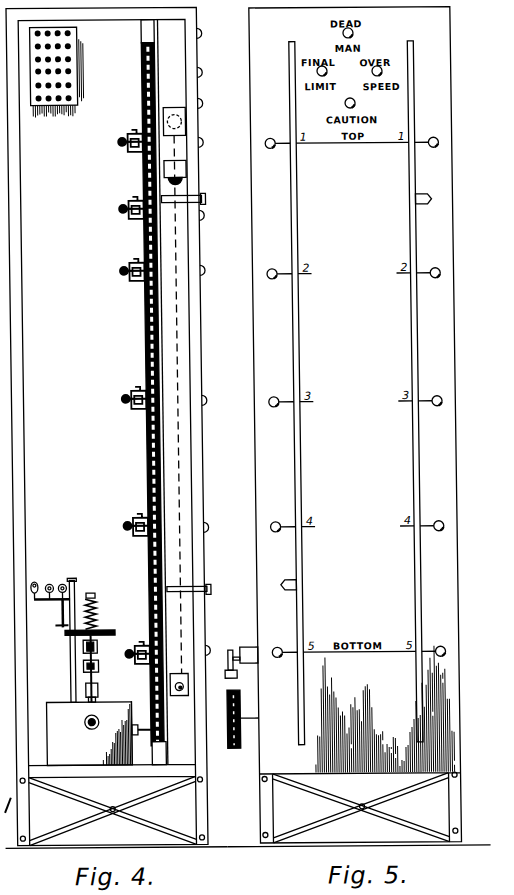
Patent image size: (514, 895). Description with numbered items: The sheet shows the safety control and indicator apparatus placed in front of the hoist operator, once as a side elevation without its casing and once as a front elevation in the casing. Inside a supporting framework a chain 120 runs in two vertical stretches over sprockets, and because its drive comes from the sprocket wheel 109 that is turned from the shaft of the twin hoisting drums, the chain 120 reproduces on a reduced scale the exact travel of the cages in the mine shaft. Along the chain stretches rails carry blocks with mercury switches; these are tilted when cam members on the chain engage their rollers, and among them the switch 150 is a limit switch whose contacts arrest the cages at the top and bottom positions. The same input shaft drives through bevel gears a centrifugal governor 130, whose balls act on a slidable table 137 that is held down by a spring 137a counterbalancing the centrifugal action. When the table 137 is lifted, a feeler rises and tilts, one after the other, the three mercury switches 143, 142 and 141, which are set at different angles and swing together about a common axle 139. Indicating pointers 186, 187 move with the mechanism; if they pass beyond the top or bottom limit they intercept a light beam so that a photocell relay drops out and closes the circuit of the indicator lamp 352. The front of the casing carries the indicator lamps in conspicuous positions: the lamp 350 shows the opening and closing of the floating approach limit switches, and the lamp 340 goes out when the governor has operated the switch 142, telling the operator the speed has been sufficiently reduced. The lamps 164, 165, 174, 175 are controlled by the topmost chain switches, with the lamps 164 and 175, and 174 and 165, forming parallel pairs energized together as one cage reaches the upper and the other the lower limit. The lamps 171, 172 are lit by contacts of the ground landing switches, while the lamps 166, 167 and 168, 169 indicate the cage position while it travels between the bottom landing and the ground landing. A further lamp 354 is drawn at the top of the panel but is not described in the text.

In FIG. 4, the chain 120 is at (146, 470).
In FIG. 4, the mercury switch 141 is at (33, 581).
In FIG. 4, the mercury switch 142 is at (48, 582).
In FIG. 4, the mercury switch 143 is at (62, 582).
In FIG. 4, the axle 139 is at (60, 625).
In FIG. 4, the spring 137a is at (94, 601).
In FIG. 4, the slidable table 137 is at (70, 634).
In FIG. 4, the centrifugal governor 130 is at (82, 654).
In FIG. 4, the limit switch 150 is at (144, 645).
In FIG. 4, the indicating pointer 186 is at (182, 589).
In FIG. 5, the indicating pointer 186 is at (436, 200).
In FIG. 5, the dead man lamp 354 is at (359, 34).
In FIG. 5, the indicator lamp 352 is at (322, 72).
In FIG. 5, the lamp 350 is at (387, 73).
In FIG. 5, the lamp 340 is at (350, 104).
In FIG. 5, the lamp 175 is at (269, 144).
In FIG. 5, the lamp 174 is at (443, 144).
In FIG. 5, the indicating lamp 172 is at (269, 274).
In FIG. 5, the indicating lamp 171 is at (443, 274).
In FIG. 5, the indicator lamp 167 is at (269, 402).
In FIG. 5, the indicator lamp 166 is at (443, 402).
In FIG. 5, the indicator lamp 169 is at (269, 527).
In FIG. 5, the indicator lamp 168 is at (441, 530).
In FIG. 5, the lamp 165 is at (274, 658).
In FIG. 5, the lamp 164 is at (442, 654).
In FIG. 5, the indicating pointer 187 is at (288, 592).
In FIG. 5, the sprocket wheel 109 is at (229, 750).